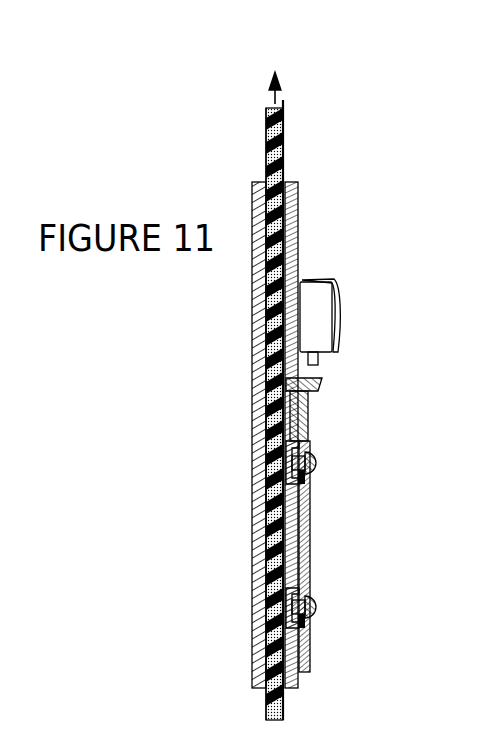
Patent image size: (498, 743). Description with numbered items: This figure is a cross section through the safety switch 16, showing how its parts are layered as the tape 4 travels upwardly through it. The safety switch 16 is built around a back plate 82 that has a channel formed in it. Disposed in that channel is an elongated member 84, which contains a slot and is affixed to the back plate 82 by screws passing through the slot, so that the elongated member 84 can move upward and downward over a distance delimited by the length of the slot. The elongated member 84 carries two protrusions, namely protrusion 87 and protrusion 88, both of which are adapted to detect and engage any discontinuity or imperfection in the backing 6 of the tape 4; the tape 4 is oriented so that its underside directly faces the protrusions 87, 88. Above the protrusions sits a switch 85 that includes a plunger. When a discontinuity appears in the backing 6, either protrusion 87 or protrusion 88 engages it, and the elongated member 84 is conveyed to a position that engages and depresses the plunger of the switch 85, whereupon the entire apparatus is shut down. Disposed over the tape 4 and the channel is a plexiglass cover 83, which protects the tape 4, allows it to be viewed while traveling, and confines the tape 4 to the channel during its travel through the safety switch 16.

The tape 4 is at (283, 128).
The backing 6 is at (318, 362).
The safety switch 16 is at (382, 210).
The back plate 82 is at (252, 328).
The plexiglass cover 83 is at (298, 196).
The elongated member 84 is at (310, 528).
The switch 85 is at (330, 298).
The protrusion 87 is at (306, 446).
The protrusion 88 is at (318, 392).